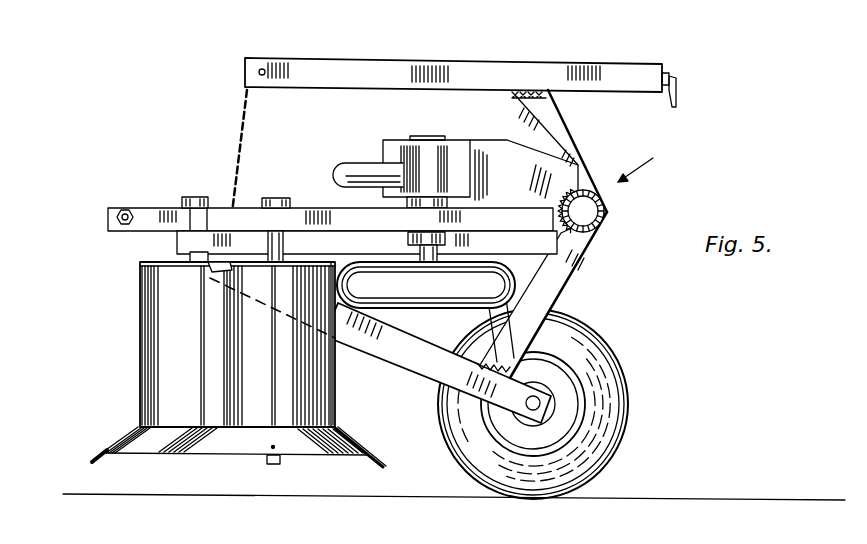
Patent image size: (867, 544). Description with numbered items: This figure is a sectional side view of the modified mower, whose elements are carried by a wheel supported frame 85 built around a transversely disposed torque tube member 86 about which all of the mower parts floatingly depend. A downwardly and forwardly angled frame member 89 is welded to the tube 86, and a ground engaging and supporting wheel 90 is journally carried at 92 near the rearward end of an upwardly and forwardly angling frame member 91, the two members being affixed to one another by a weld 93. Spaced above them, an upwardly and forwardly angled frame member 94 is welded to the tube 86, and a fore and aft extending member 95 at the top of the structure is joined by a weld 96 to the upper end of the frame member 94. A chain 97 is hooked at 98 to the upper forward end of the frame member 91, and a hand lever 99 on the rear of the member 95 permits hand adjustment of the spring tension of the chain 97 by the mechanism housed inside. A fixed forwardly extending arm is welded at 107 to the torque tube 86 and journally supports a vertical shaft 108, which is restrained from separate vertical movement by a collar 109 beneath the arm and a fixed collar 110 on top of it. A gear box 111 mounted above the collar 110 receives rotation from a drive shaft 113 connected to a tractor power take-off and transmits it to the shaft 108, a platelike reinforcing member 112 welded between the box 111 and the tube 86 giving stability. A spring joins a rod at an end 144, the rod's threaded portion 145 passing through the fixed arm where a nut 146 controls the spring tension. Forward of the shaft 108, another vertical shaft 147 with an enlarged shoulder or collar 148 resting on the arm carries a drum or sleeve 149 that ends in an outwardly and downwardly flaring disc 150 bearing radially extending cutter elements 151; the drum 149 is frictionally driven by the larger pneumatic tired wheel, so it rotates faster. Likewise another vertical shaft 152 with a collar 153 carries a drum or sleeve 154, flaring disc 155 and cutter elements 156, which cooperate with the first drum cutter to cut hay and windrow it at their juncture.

The wheel supported frame 85 is at (649, 162).
The torque tube member 86 is at (605, 213).
The frame member 89 is at (562, 287).
The ground engaging and supporting wheel 90 is at (624, 386).
The frame member 91 is at (408, 362).
The wheel journal 92 is at (528, 406).
The weld 93 is at (503, 361).
The frame member 94 is at (566, 128).
The fore and aft extending member 95 is at (465, 58).
The weld 96 is at (516, 100).
The chain 97 is at (242, 120).
The hook 98 is at (227, 263).
The hand lever 99 is at (678, 80).
The weld 107 is at (578, 240).
The vertical shaft 108 is at (423, 262).
The collar 109 is at (408, 246).
The fixed collar 110 is at (435, 196).
The gear box 111 is at (397, 146).
The platelike reinforcing member 112 is at (523, 190).
The drive shaft 113 is at (353, 166).
The rod end 144 is at (463, 304).
The threaded portion 145 is at (122, 210).
The nut 146 is at (123, 226).
The vertical shaft 147 is at (290, 247).
The enlarged shoulder or collar 148 is at (277, 198).
The drum or sleeve 149 is at (335, 398).
The outwardly and downwardly flaring disc 150 is at (240, 447).
The radially extending cutter elements 151 is at (380, 466).
The vertical shaft 152 is at (190, 256).
The enlarged shoulder or collar 153 is at (185, 200).
The drum or sleeve 154 is at (142, 353).
The outwardly and downwardly flaring disc 155 is at (122, 437).
The radially extending cutter elements 156 is at (95, 458).